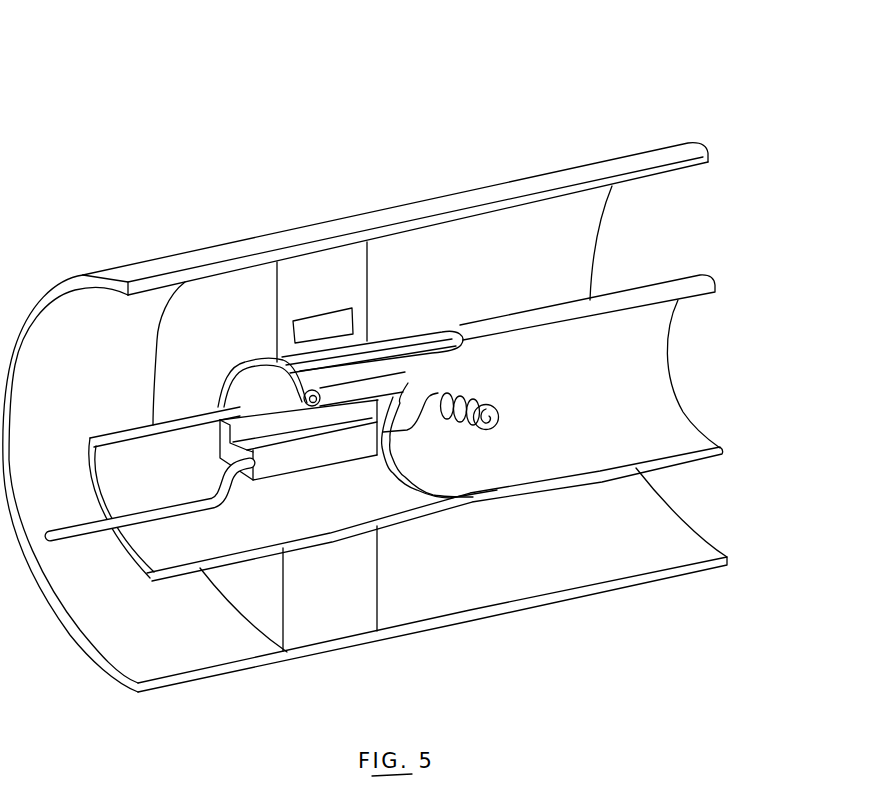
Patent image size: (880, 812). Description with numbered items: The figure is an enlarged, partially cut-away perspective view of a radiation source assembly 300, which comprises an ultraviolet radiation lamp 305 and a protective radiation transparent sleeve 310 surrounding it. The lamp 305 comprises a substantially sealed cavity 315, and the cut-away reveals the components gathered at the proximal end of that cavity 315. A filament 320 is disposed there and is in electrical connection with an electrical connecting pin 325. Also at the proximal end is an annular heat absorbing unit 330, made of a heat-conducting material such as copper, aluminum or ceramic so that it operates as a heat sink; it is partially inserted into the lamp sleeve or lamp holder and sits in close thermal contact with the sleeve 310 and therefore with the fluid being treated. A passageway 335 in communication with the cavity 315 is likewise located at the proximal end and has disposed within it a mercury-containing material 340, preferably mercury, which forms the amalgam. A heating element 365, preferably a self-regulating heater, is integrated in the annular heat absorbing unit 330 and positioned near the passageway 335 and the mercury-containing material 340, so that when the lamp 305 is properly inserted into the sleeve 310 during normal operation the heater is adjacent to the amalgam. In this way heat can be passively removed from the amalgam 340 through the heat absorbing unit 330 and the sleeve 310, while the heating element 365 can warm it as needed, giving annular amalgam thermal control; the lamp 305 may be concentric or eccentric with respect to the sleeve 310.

The radiation source assembly 300 is at (495, 110).
The ultraviolet radiation lamp 305 is at (600, 478).
The protective radiation transparent sleeve 310 is at (563, 177).
The sealed cavity 315 is at (607, 409).
The filament 320 is at (480, 428).
The electrical connecting pin 325 is at (62, 541).
The annular heat absorbing unit 330 is at (218, 313).
The passageway 335 is at (385, 383).
The mercury-containing material 340 is at (308, 388).
The heating element 365 is at (322, 327).